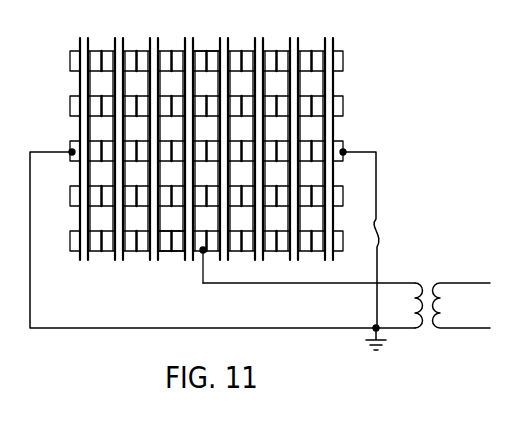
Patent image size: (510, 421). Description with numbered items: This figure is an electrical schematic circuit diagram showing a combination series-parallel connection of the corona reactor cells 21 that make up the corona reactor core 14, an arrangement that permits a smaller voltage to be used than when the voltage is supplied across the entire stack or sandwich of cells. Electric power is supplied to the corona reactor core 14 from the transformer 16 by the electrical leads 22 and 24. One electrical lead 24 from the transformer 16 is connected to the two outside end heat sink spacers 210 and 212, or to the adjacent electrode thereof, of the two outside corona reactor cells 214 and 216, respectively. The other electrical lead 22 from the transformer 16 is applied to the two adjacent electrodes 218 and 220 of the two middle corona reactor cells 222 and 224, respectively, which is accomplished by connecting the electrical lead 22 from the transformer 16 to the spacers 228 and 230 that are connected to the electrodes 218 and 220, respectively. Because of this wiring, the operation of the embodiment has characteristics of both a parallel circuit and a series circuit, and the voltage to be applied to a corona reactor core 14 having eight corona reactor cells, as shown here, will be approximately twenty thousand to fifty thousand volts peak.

The corona reactor core 14 is at (234, 155).
The transformer 16 is at (432, 286).
The corona reactor cells 21 is at (321, 39).
The electrical lead 22 is at (217, 284).
The electrical lead 24 is at (339, 330).
The heat sink spacer 210 is at (70, 107).
The heat sink spacer 212 is at (344, 109).
The corona reactor cell 214 is at (83, 38).
The corona reactor cell 216 is at (322, 62).
The electrode 218 is at (198, 253).
The electrode 220 is at (205, 252).
The corona reactor cell 222 is at (186, 240).
The corona reactor cell 224 is at (223, 245).
The spacer 228 is at (189, 44).
The spacer 230 is at (207, 42).